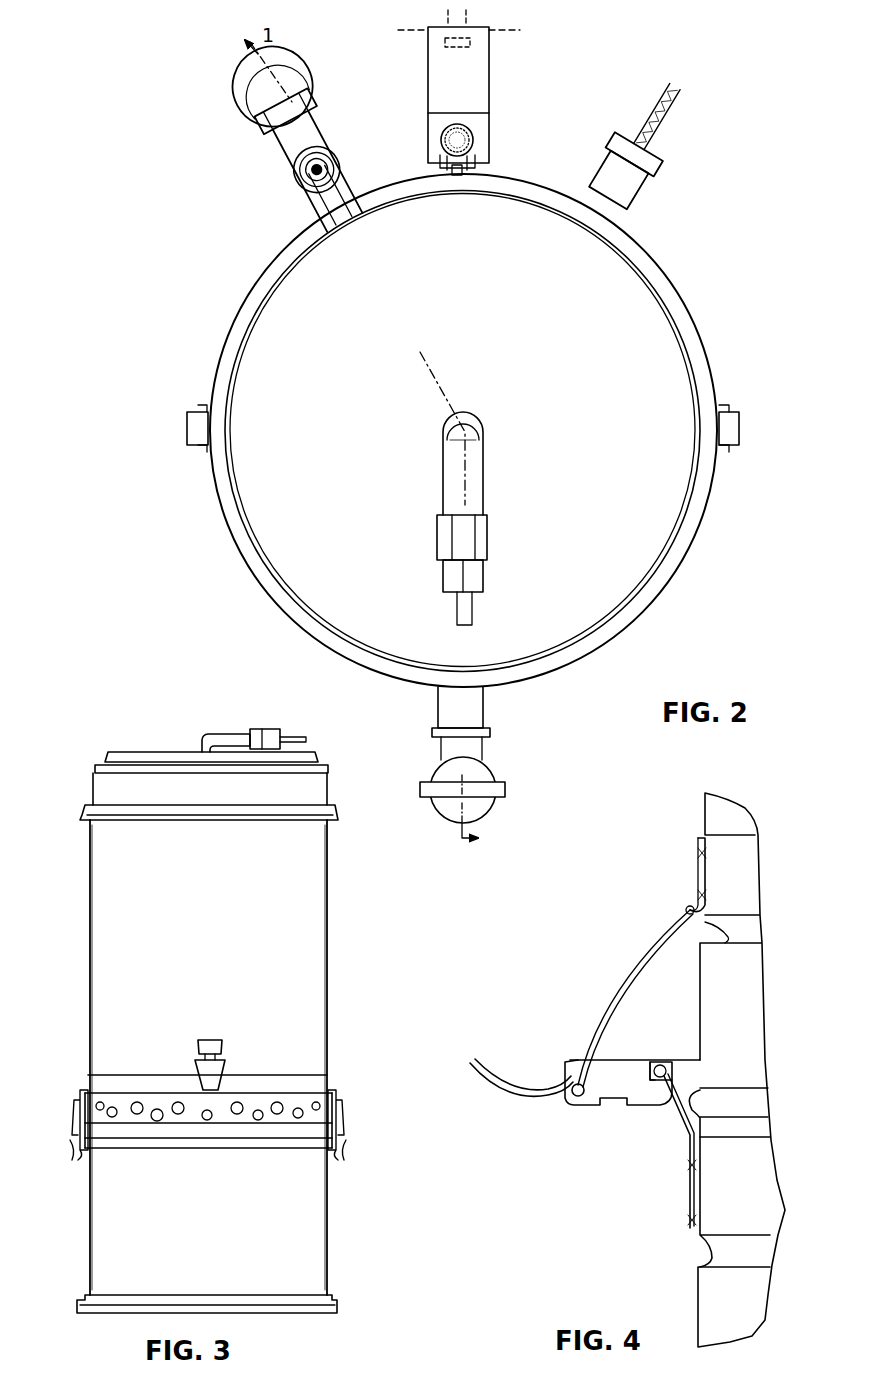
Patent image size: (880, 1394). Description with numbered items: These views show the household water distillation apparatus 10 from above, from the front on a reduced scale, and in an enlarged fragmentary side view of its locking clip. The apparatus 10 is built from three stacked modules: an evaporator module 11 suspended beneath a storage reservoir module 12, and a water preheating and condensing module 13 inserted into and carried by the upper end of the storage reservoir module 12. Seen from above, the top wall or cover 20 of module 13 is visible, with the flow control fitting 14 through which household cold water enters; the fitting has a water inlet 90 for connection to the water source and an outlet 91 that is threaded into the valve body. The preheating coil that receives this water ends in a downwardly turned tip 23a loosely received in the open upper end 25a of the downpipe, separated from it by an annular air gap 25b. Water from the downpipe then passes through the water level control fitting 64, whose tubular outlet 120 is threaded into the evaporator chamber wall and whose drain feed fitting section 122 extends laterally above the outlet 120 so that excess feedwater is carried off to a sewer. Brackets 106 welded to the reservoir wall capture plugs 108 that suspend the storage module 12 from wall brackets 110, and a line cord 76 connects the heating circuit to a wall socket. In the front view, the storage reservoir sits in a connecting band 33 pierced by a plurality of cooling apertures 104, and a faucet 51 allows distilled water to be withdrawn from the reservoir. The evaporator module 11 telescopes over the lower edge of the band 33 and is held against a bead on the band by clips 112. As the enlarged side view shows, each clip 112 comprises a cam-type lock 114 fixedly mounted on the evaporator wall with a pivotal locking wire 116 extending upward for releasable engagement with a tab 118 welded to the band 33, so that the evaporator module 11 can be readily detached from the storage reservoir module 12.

In FIG. 3, the water distillation apparatus 10 is at (334, 938).
In FIG. 4, the evaporator module 11 is at (700, 1311).
In FIG. 3, the storage reservoir module 12 is at (333, 872).
In FIG. 3, the water preheating and condensing module 13 is at (332, 786).
In FIG. 2, the flow control fitting 14 is at (492, 473).
In FIG. 3, the flow control fitting 14 is at (236, 731).
In FIG. 2, the top wall or cover 20 is at (668, 330).
In FIG. 2, the downwardly turned tip 23a is at (330, 195).
In FIG. 2, the open upper end of downpipe 25a is at (317, 169).
In FIG. 2, the annular air gap 25b is at (317, 170).
In FIG. 3, the connecting band 33 is at (283, 1114).
In FIG. 4, the connecting band 33 is at (710, 1044).
In FIG. 2, the faucet 51 is at (495, 772).
In FIG. 3, the faucet 51 is at (226, 1063).
In FIG. 2, the water level control fitting 64 is at (307, 72).
In FIG. 2, the line cord 76 is at (636, 130).
In FIG. 2, the water inlet 90 is at (489, 535).
In FIG. 2, the outlet 91 is at (450, 458).
In FIG. 3, the cooling apertures 104 is at (137, 1114).
In FIG. 2, the brackets 106 is at (478, 146).
In FIG. 2, the plugs 108 is at (472, 133).
In FIG. 2, the wall brackets 110 is at (487, 72).
In FIG. 2, the clips 112 is at (190, 402).
In FIG. 3, the clips 112 is at (66, 1097).
In FIG. 4, the clips 112 is at (563, 1033).
In FIG. 4, the cam-type locks 114 is at (612, 1105).
In FIG. 4, the pivotal locking wires 116 is at (618, 958).
In FIG. 4, the tabs 118 is at (695, 876).
In FIG. 2, the tubular outlet 120 is at (318, 171).
In FIG. 2, the drain feed fitting section 122 is at (286, 111).